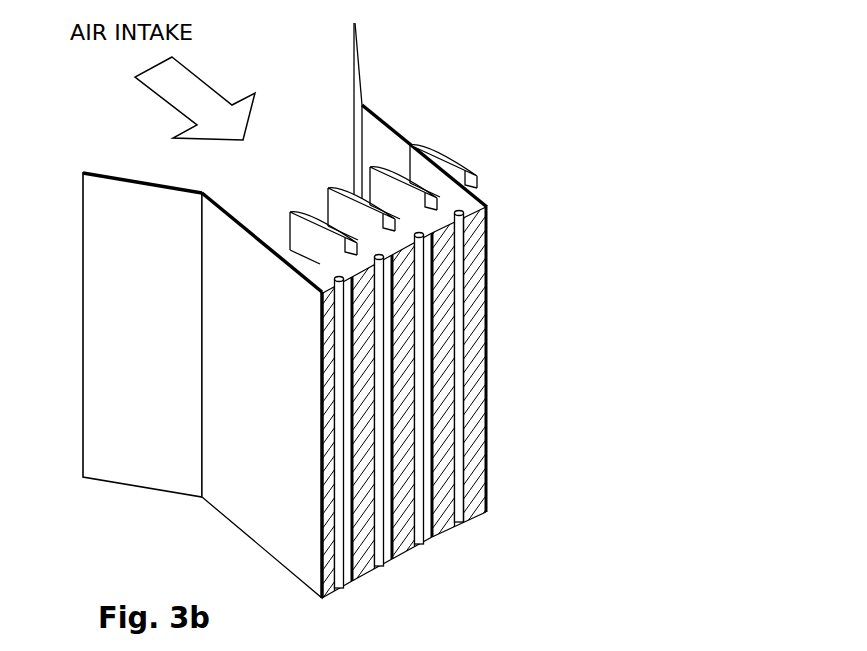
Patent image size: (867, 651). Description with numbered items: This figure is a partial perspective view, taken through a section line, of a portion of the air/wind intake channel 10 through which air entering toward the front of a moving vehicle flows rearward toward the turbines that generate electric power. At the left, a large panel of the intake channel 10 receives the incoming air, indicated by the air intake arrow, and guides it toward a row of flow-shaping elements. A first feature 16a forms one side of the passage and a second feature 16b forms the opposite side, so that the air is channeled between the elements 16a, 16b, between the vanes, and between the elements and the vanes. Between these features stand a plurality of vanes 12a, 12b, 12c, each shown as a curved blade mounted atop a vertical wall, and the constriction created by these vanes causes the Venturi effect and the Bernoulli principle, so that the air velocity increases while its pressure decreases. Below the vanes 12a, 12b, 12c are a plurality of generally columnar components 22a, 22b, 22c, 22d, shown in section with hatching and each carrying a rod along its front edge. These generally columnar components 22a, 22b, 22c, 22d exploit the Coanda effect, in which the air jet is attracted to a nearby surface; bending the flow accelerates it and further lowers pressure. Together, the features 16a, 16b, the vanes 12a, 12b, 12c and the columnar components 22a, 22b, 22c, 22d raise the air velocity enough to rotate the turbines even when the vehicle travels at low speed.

The air/wind intake channel 10 is at (137, 328).
The vane 12a is at (300, 213).
The vane 12b is at (340, 196).
The vane 12c is at (383, 182).
The feature (channeling element) 16a is at (300, 268).
The feature (channeling element) 16b is at (455, 187).
The generally columnar component 22a is at (362, 577).
The generally columnar component 22b is at (398, 558).
The generally columnar component 22c is at (447, 537).
The generally columnar component 22d is at (484, 512).